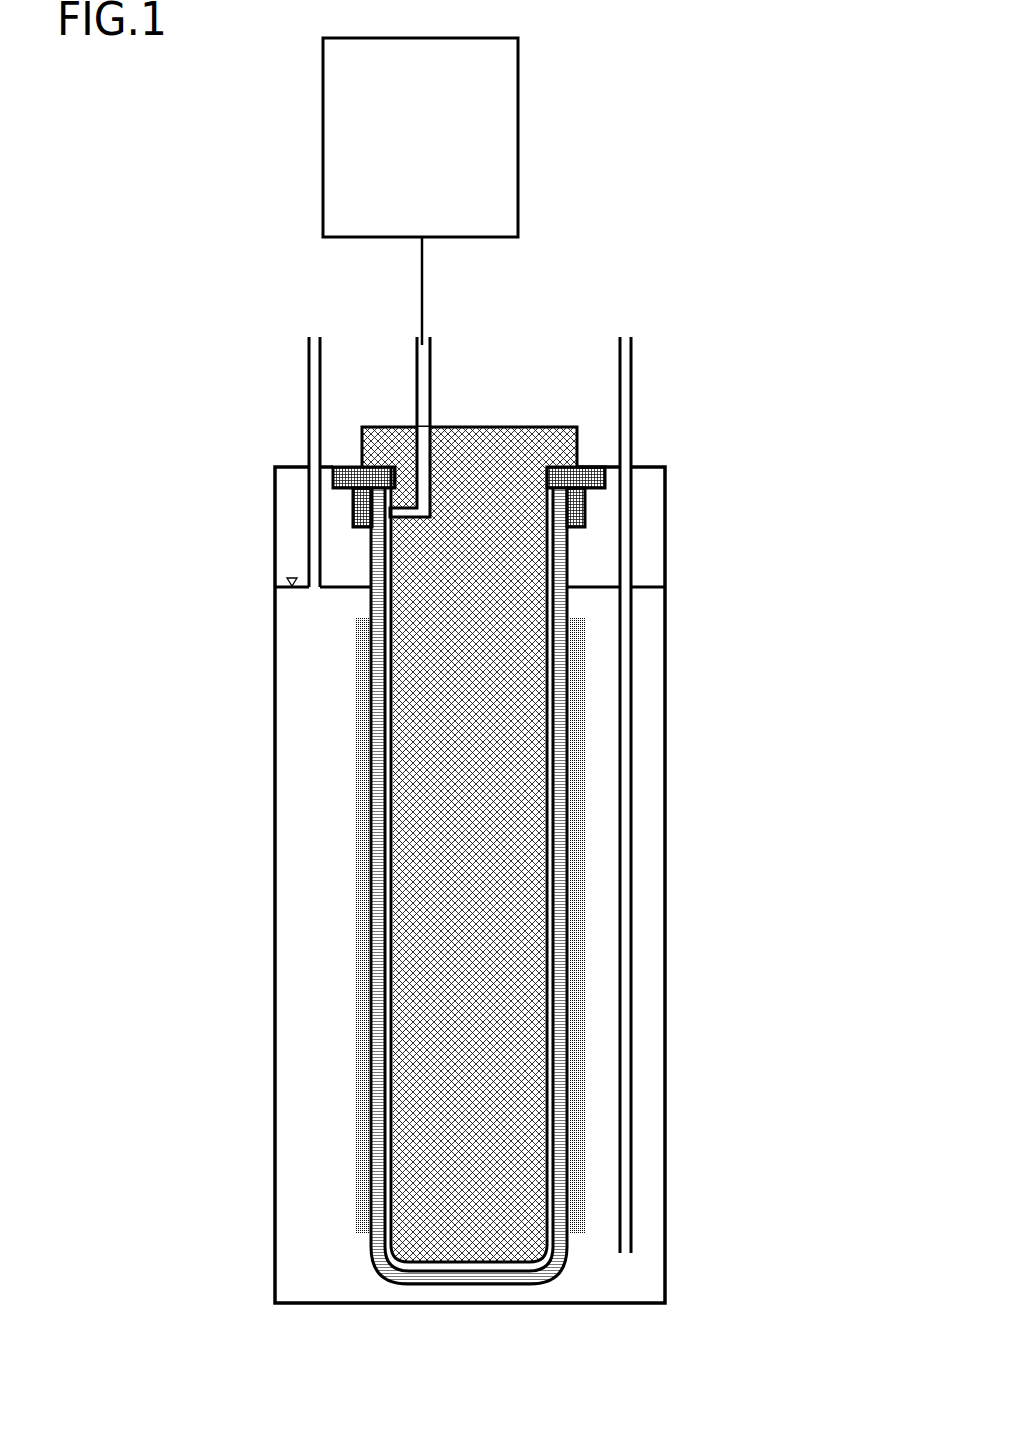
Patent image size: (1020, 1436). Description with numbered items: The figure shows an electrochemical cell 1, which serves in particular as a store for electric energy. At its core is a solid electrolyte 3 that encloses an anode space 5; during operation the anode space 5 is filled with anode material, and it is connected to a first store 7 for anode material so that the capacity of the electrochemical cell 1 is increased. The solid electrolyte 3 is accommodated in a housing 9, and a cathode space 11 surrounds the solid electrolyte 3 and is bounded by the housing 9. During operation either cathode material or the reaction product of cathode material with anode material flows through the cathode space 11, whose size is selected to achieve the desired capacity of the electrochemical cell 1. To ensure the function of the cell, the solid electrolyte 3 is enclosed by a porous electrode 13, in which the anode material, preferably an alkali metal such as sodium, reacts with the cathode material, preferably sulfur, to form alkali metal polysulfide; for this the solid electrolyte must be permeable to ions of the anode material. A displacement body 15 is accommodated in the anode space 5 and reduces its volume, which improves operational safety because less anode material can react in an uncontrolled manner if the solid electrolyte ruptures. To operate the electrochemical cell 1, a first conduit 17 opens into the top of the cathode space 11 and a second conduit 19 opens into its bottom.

The electrochemical cell 1 is at (715, 542).
The solid electrolyte 3 is at (505, 1277).
The anode space 5 is at (548, 950).
The first store 7 is at (495, 135).
The housing 9 is at (273, 955).
The cathode space 11 is at (305, 1190).
The porous electrode 13 is at (365, 810).
The displacement body 15 is at (495, 695).
The first conduit 17 is at (313, 438).
The second conduit 19 is at (625, 358).